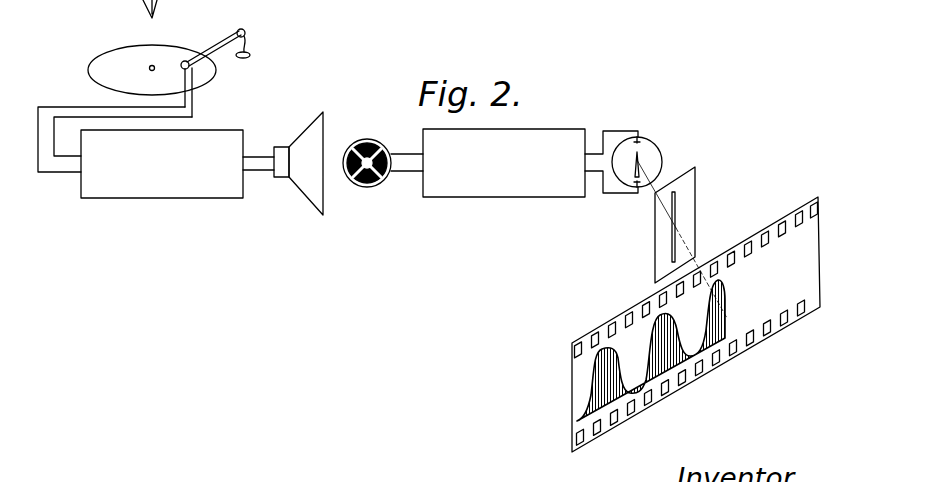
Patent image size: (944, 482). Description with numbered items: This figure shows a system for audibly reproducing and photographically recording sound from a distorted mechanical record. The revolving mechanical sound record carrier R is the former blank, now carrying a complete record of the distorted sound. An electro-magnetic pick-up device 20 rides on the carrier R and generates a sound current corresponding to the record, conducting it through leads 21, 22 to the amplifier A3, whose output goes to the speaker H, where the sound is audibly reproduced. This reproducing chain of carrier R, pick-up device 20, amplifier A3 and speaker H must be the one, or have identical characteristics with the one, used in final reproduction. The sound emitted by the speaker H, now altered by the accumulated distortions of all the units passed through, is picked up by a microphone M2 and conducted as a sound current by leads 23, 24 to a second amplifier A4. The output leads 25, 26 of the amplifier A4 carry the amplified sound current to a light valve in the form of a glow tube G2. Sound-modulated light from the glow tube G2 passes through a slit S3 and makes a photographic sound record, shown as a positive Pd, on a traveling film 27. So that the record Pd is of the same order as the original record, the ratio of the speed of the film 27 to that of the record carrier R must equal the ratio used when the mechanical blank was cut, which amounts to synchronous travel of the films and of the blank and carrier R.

The revolving mechanical sound record carrier R is at (135, 58).
The electro-magnetic pick-up device 20 is at (183, 62).
The lead 21 is at (193, 108).
The lead 22 is at (184, 97).
The amplifier A3 is at (207, 183).
The speaker H is at (307, 177).
The microphone M2 is at (368, 187).
The lead 23 is at (402, 154).
The lead 24 is at (402, 172).
The amplifier A4 is at (483, 182).
The output lead 25 is at (594, 152).
The output lead 26 is at (592, 173).
The glow tube G2 is at (645, 152).
The slit S3 is at (674, 233).
The traveling film 27 is at (568, 388).
The positive photographic sound record Pd is at (720, 357).